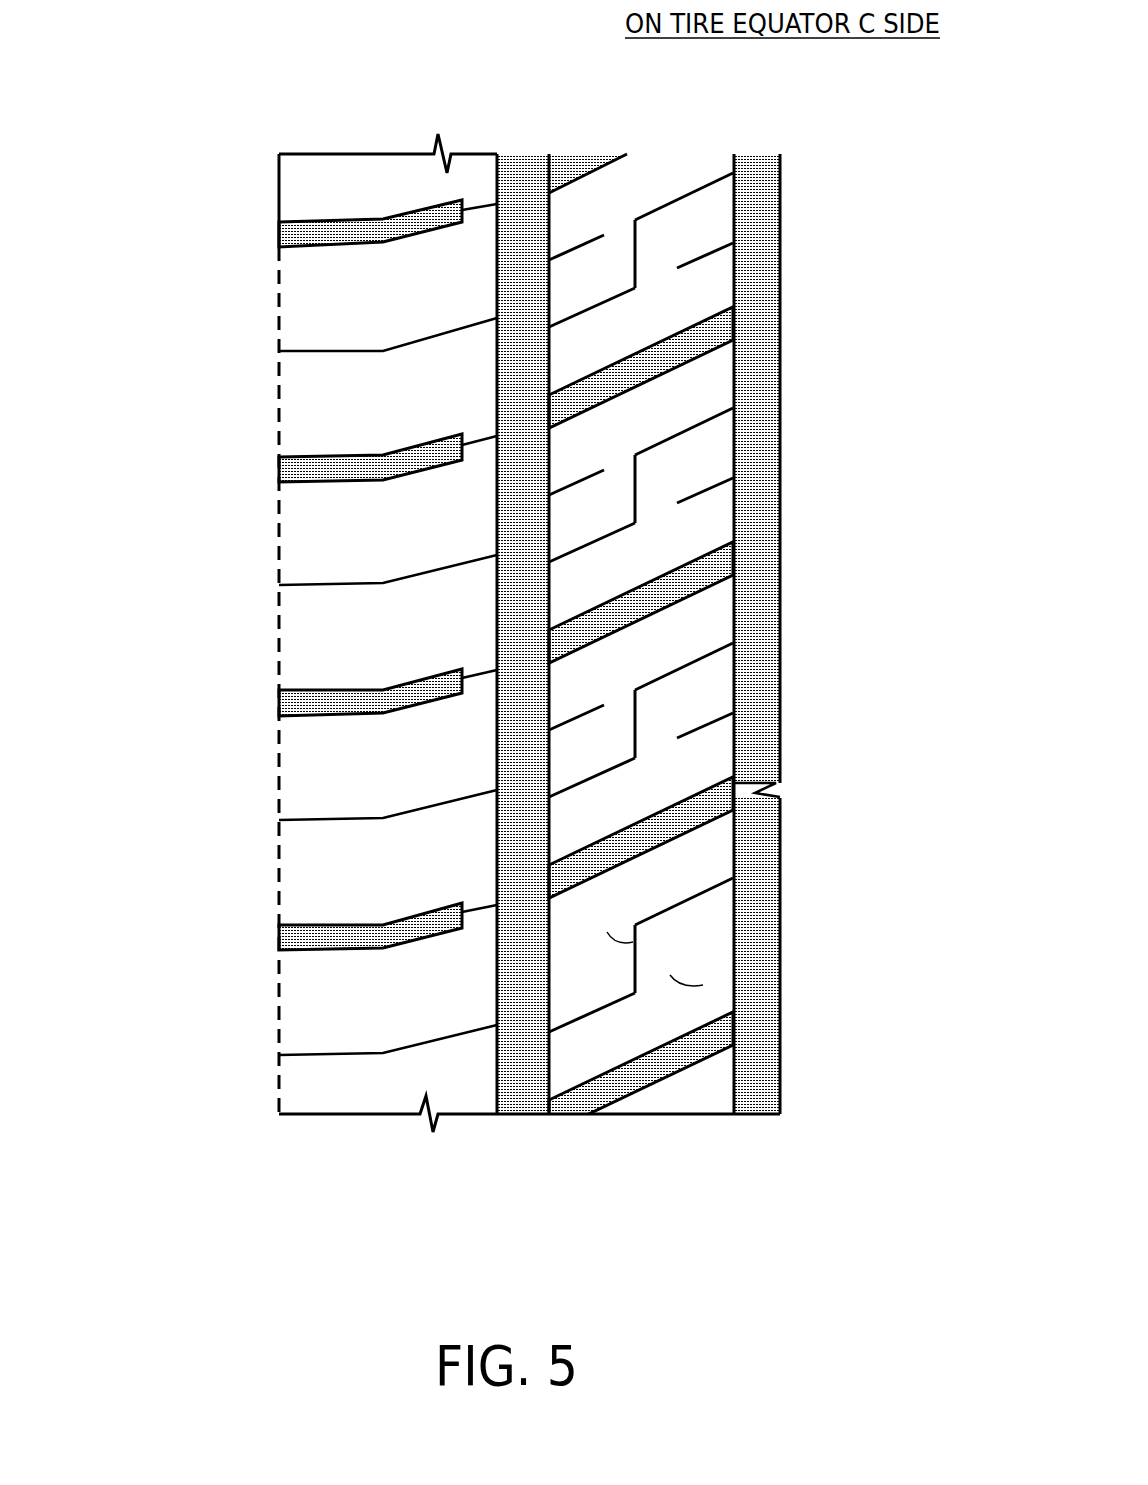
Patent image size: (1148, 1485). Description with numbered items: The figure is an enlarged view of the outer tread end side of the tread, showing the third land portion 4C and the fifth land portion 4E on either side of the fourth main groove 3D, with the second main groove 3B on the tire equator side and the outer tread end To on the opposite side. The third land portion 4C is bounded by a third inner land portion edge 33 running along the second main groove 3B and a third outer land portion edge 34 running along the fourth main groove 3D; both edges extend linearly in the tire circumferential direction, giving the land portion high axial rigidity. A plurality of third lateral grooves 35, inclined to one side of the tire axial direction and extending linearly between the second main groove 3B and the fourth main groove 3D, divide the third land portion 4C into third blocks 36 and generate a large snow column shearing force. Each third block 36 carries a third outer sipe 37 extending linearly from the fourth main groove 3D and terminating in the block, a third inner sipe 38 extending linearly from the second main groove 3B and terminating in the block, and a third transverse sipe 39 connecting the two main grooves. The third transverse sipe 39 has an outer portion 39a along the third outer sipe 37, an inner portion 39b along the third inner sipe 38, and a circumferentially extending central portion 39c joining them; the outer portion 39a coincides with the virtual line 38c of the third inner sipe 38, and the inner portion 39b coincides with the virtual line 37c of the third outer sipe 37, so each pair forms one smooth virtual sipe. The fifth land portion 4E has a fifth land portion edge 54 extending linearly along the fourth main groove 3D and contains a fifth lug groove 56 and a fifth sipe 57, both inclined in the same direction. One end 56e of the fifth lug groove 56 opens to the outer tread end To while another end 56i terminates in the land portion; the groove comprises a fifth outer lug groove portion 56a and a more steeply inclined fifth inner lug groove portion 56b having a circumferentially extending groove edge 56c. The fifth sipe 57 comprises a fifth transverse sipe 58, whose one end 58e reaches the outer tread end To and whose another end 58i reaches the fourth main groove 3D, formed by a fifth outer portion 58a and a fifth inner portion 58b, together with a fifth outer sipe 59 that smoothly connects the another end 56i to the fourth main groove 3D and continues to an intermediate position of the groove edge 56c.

The outer tread end To is at (279, 188).
The fifth land portion 4E is at (373, 192).
The fourth main groove 3D is at (524, 192).
The third land portion 4C is at (645, 192).
The second main groove 3B is at (758, 192).
The third inner land portion edge 33 is at (733, 992).
The third outer land portion edge 34 is at (548, 1066).
The third lateral groove 35 is at (647, 365).
The third block 36 is at (690, 525).
The third outer sipe 37 is at (577, 480).
The third inner sipe 38 is at (707, 482).
The third transverse sipe 39 is at (719, 690).
The outer portion 39a is at (593, 778).
The inner portion 39b is at (685, 662).
The central portion 39c is at (637, 722).
The virtual line 37c is at (637, 940).
The virtual line 38c is at (640, 987).
The fifth land portion edge 54 is at (497, 1068).
The fifth lug groove 56 is at (160, 533).
The fifth outer lug groove portion 56a is at (327, 703).
The fifth inner lug groove portion 56b is at (423, 692).
The groove edge 56c is at (462, 434).
The one end 56e is at (278, 703).
The another end 56i is at (458, 670).
The fifth sipe 57 is at (122, 720).
The fifth transverse sipe 58 is at (187, 822).
The fifth outer portion 58a is at (328, 822).
The fifth inner portion 58b is at (437, 803).
The one end 58e is at (278, 820).
The another end 58i is at (497, 937).
The fifth outer sipe 59 is at (477, 678).